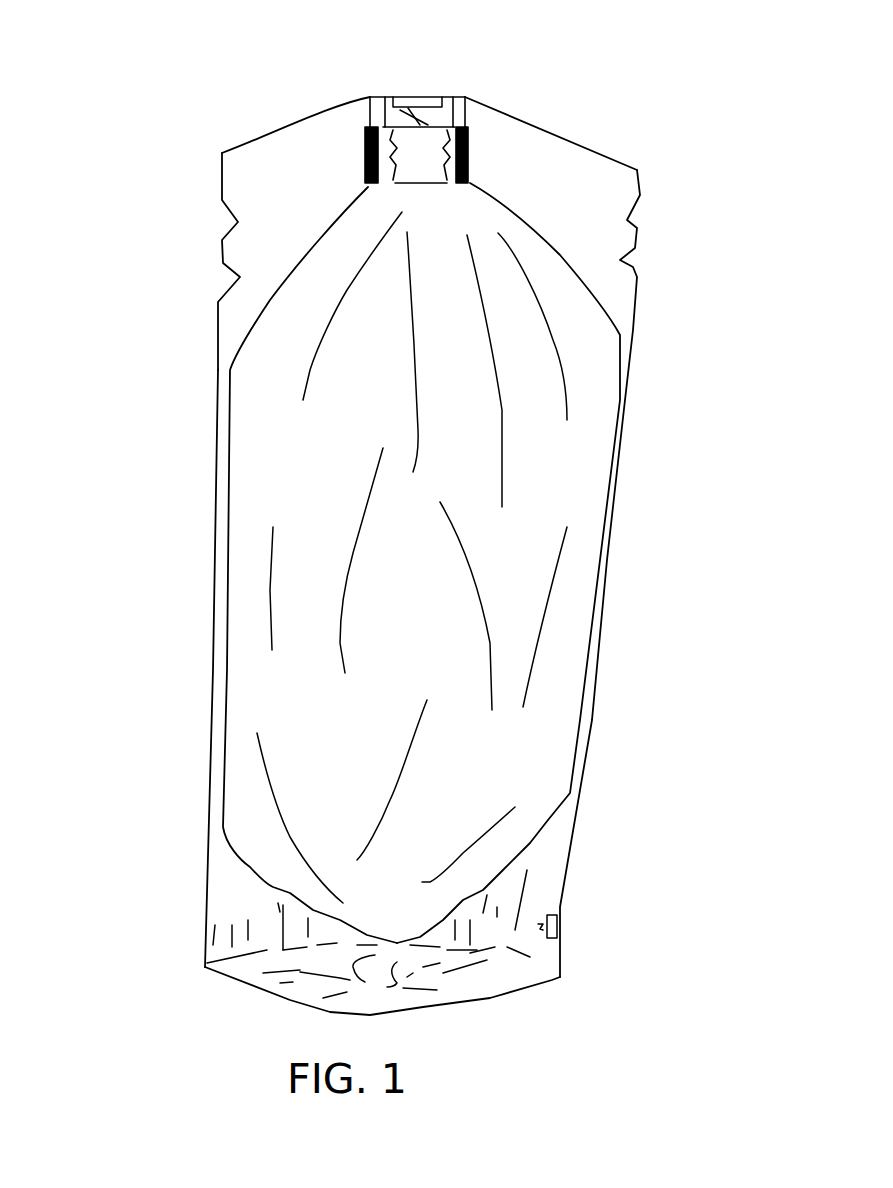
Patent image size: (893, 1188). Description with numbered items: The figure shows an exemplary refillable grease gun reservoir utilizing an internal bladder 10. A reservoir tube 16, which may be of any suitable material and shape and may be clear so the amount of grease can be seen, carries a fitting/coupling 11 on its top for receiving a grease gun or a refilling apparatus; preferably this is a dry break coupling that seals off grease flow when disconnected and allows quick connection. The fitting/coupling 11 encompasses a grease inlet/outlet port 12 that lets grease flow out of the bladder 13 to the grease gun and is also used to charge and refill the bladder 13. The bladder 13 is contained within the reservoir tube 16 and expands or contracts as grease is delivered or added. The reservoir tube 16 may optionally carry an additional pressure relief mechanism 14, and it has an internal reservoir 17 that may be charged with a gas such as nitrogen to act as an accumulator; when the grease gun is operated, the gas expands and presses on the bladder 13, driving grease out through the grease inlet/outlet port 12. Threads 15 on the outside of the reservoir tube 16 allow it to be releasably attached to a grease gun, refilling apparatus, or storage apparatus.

The refillable grease gun reservoir utilizing an internal bladder 10 is at (484, 507).
The fitting/coupling 11 is at (370, 97).
The grease inlet/outlet port 12 is at (423, 87).
The bladder 13 is at (545, 463).
The pressure relief mechanism 14 is at (565, 922).
The threads 15 is at (210, 250).
The reservoir tube 16 is at (212, 531).
The internal reservoir 17 is at (232, 888).